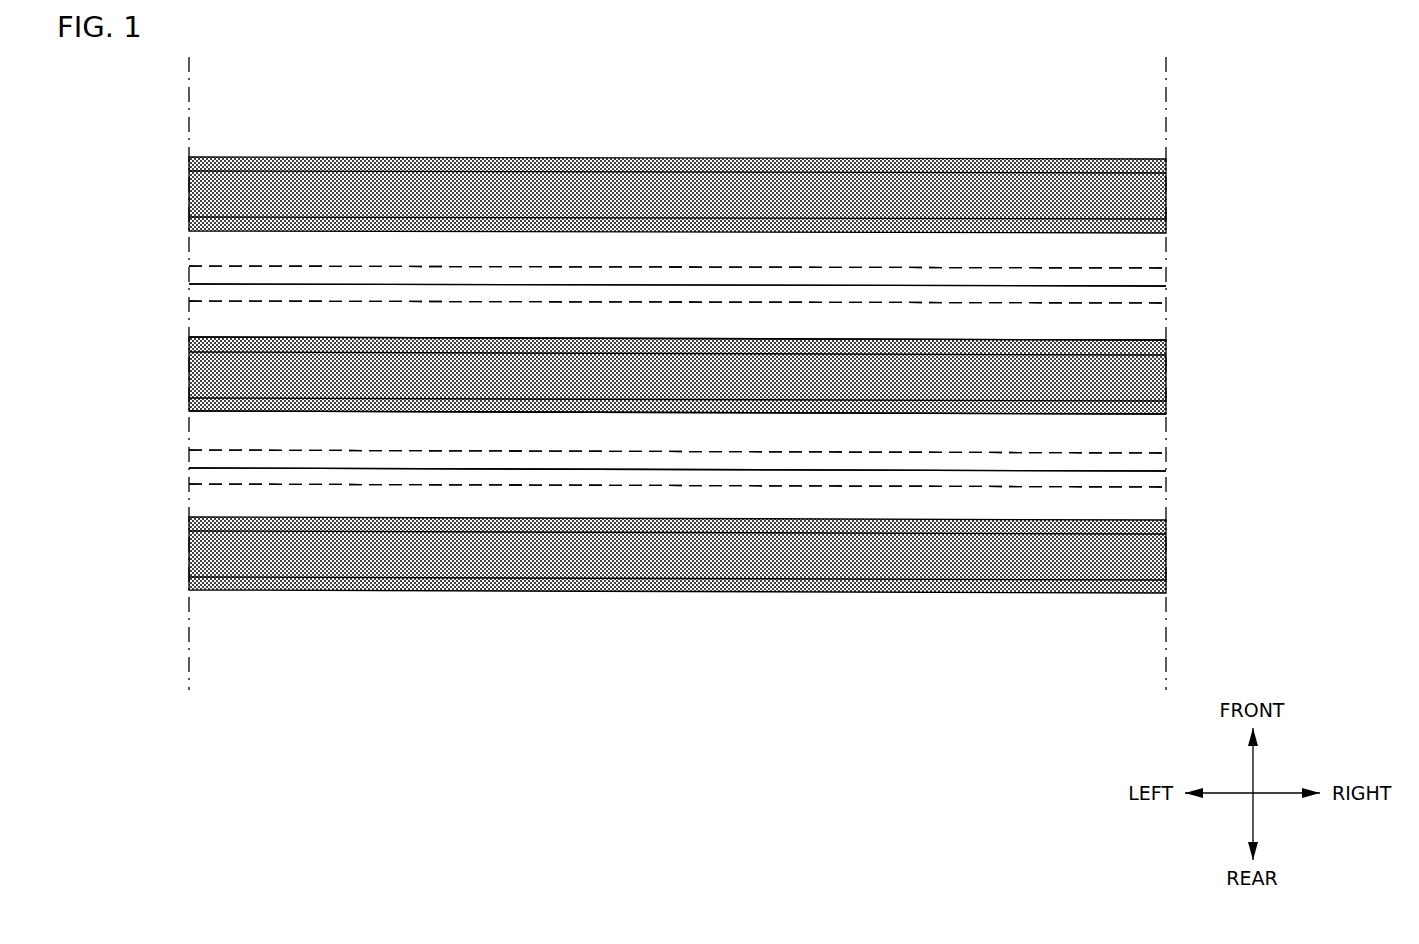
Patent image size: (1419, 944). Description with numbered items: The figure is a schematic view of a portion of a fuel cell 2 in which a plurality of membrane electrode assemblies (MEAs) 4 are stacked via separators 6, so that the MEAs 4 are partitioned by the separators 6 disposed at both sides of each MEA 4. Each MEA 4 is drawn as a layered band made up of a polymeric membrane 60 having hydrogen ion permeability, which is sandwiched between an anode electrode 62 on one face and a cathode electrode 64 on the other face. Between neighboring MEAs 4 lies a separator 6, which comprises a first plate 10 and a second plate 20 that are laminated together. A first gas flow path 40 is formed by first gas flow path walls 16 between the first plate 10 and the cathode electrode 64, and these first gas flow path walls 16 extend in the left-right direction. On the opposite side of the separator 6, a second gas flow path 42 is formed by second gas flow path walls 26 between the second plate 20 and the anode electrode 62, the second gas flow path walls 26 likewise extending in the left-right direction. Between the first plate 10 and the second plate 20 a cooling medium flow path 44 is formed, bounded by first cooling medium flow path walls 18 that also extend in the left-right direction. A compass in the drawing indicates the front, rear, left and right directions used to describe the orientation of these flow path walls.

The fuel cell 2 is at (952, 677).
The membrane electrode assembly 4 is at (170, 157).
The separator 6 is at (170, 233).
The first plate 10 is at (589, 254).
The second plate 20 is at (655, 316).
The first gas flow path walls 16 is at (1153, 252).
The first gas flow path 40 is at (756, 348).
The first cooling medium flow path walls 18 is at (1150, 290).
The cooling medium flow path 44 is at (756, 384).
The second gas flow path walls 26 is at (1155, 320).
The second gas flow path 42 is at (756, 423).
The polymeric membrane 60 is at (1150, 383).
The anode electrode 62 is at (1150, 348).
The cathode electrode 64 is at (1152, 412).